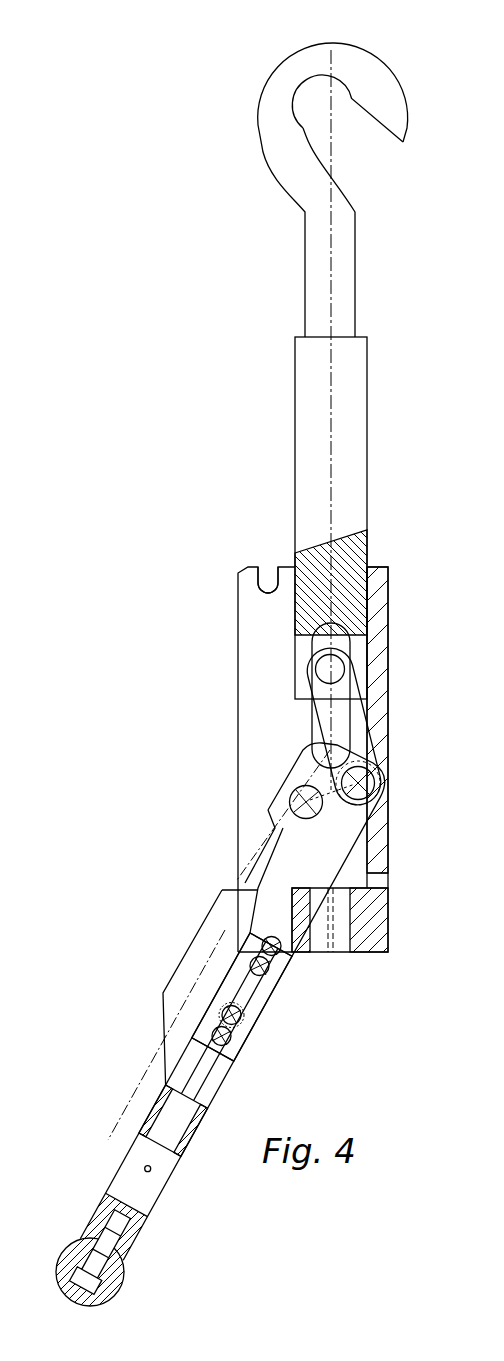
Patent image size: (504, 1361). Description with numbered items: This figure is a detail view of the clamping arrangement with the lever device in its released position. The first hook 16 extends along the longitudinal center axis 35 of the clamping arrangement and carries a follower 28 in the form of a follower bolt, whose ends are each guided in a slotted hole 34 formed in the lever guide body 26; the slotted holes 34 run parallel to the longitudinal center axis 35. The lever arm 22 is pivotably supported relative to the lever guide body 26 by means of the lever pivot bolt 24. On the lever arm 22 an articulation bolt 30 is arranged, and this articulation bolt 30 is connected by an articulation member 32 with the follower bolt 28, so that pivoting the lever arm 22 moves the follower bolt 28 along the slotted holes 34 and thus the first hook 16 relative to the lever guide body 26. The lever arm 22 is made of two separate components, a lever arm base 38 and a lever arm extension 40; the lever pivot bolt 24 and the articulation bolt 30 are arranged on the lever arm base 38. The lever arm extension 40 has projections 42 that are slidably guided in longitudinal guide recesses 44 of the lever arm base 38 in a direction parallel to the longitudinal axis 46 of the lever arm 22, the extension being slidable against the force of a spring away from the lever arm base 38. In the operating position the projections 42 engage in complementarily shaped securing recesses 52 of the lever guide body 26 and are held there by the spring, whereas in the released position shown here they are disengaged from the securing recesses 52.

The first hook 16 is at (290, 130).
The longitudinal center axis 35 is at (330, 503).
The securing recess 52 is at (266, 574).
The lever guide body 26 is at (380, 623).
The follower bolt 28 is at (322, 668).
The slotted hole 34 is at (340, 710).
The articulation member 32 is at (372, 750).
The articulation bolt 30 is at (372, 780).
The lever pivot bolt 24 is at (300, 807).
The lever arm 22 is at (120, 862).
The lever arm base 38 is at (258, 890).
The lever arm extension 40 is at (130, 1177).
The projection 42 is at (240, 1040).
The longitudinal guide recess 44 is at (285, 965).
The longitudinal axis of the lever arm 46 is at (138, 1185).